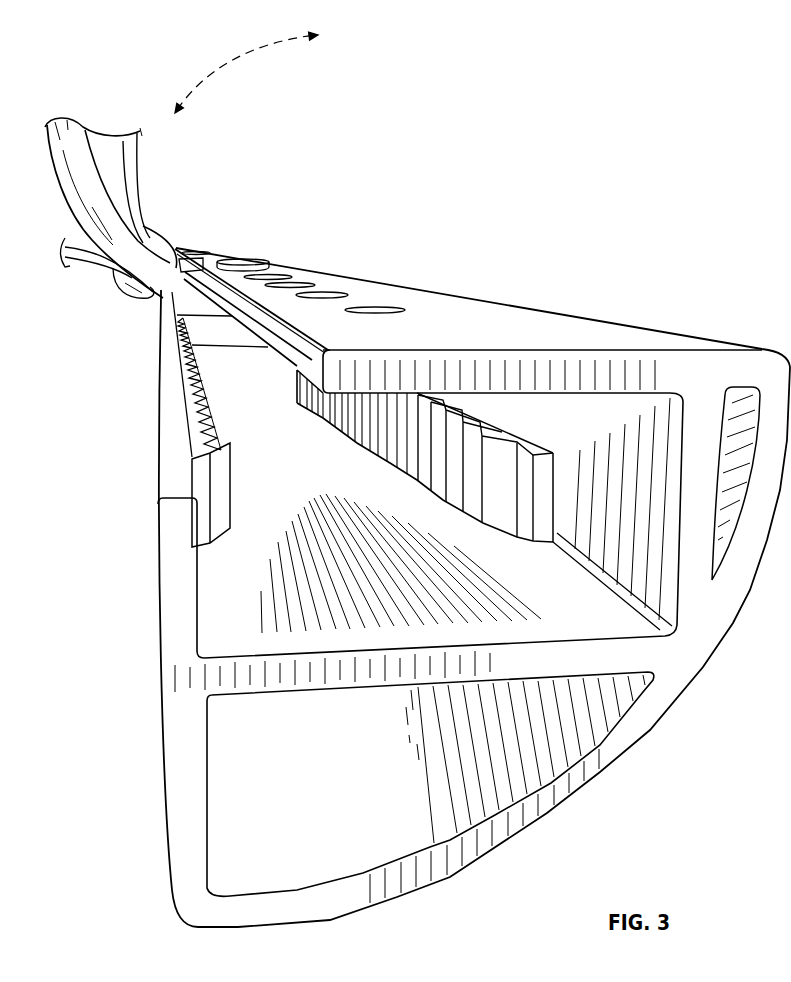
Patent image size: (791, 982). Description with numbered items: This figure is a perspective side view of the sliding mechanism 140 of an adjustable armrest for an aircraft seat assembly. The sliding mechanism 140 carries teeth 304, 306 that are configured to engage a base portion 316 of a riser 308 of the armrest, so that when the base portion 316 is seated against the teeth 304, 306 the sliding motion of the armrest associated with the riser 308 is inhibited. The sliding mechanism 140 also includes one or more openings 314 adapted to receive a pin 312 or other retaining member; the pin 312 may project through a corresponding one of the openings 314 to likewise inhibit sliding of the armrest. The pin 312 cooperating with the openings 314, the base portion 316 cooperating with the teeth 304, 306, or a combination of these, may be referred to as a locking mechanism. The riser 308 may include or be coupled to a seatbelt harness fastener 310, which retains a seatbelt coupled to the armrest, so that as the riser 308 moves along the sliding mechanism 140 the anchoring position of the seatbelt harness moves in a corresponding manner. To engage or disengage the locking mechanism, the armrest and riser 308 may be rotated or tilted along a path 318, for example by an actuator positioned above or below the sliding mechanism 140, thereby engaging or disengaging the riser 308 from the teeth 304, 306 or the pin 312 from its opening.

The sliding mechanism 140 is at (433, 296).
The teeth 304 is at (393, 447).
The teeth 306 is at (226, 458).
The riser 308 is at (105, 215).
The seatbelt harness fastener 310 is at (133, 292).
The pin 312 is at (253, 262).
The openings 314 is at (327, 293).
The base portion 316 is at (227, 350).
The path 318 is at (230, 58).